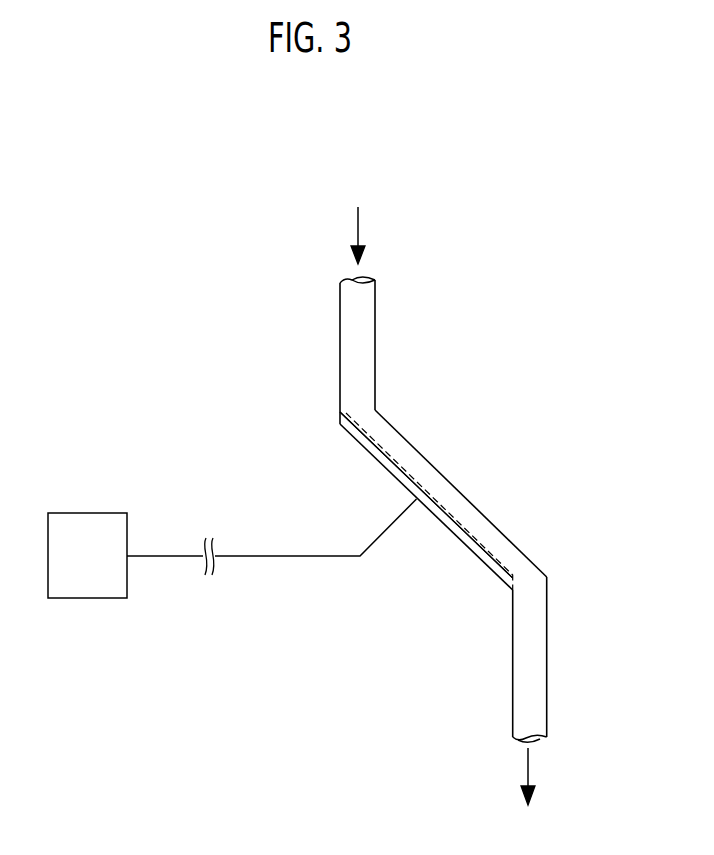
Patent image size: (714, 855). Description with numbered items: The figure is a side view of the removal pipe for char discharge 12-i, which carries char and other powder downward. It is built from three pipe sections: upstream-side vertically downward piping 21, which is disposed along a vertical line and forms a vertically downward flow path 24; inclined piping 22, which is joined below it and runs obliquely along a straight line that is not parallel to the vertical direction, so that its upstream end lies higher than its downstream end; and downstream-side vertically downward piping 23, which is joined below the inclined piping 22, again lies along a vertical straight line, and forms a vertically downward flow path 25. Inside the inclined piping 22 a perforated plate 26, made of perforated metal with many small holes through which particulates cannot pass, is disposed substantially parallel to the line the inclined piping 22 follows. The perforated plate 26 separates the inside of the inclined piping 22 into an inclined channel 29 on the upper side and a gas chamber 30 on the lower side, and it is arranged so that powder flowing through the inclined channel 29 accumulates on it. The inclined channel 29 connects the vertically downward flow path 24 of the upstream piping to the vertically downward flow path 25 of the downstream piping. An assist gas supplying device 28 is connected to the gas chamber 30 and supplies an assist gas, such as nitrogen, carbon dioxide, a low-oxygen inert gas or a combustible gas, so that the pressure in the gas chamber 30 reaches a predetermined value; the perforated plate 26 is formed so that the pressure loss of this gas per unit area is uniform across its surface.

The removal pipe for char discharge 12-i is at (317, 453).
The upstream-side vertically downward piping 21 is at (340, 343).
The inclined piping 22 is at (465, 492).
The downstream-side vertically downward piping 23 is at (512, 698).
The vertically downward flow path 24 is at (360, 305).
The vertically downward flow path 25 is at (534, 674).
The perforated plate 26 is at (494, 553).
The assist gas supplying device 28 is at (222, 593).
The inclined channel 29 is at (405, 455).
The gas chamber 30 is at (478, 556).